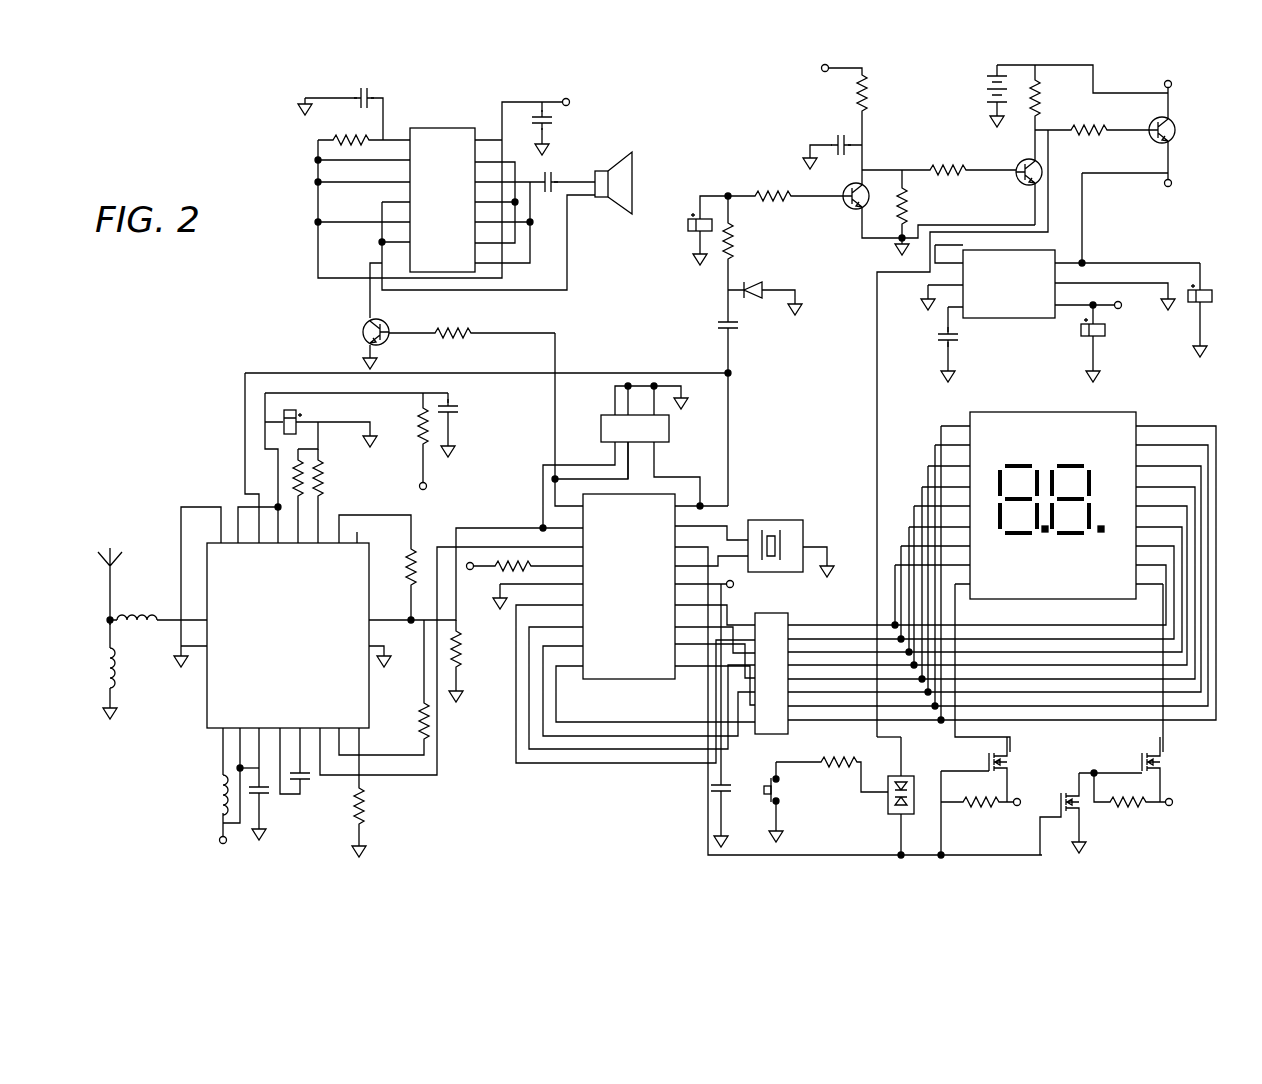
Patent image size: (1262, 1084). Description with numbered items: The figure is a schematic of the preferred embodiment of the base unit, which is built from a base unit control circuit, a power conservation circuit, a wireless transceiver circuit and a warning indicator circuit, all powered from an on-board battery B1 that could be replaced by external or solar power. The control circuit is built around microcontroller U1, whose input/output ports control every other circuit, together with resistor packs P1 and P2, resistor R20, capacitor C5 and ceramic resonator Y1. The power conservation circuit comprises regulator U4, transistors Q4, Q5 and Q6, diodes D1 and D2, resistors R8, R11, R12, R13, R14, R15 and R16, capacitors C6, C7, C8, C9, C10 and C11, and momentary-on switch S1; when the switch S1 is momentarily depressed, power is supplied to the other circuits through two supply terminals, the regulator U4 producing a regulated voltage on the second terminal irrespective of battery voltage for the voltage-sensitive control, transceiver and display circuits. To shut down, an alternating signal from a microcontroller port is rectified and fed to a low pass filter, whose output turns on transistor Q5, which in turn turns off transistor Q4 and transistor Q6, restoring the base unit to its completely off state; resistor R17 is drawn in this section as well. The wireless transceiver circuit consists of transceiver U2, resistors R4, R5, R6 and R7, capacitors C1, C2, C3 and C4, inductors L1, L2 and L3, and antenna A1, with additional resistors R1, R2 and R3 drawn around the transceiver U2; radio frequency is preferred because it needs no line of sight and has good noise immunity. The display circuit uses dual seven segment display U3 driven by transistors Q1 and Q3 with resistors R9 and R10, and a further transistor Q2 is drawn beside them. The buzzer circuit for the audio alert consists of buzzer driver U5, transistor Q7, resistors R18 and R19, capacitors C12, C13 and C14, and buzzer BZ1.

The microcontroller U1 is at (640, 606).
The transceiver U2 is at (298, 643).
The dual seven segment display U3 is at (1083, 392).
The regulator U4 is at (1014, 302).
The buzzer driver U5 is at (466, 104).
The resistor pack P1 is at (669, 428).
The resistor pack P2 is at (771, 684).
The ceramic resonator Y1 is at (780, 518).
The antenna A1 is at (114, 558).
The on-board battery B1 is at (976, 96).
The buzzer BZ1 is at (632, 183).
The diode D1 is at (908, 796).
The diode D2 is at (765, 294).
The momentary-on switch S1 is at (788, 802).
The inductor L1 is at (219, 782).
The inductor L2 is at (158, 621).
The inductor L3 is at (130, 669).
The transistor Q1 is at (992, 769).
The transistor Q2 is at (1076, 814).
The transistor Q3 is at (1167, 769).
The transistor Q4 is at (1016, 177).
The transistor Q5 is at (832, 197).
The transistor Q6 is at (1150, 133).
The transistor Q7 is at (382, 334).
The resistor R1 is at (374, 792).
The resistor R2 is at (384, 687).
The resistor R3 is at (471, 661).
The resistor R4 is at (398, 583).
The resistor R5 is at (334, 496).
The resistor R6 is at (274, 496).
The resistor R7 is at (406, 437).
The resistor R8 is at (832, 768).
The resistor R9 is at (977, 813).
The resistor R10 is at (1129, 800).
The resistor R11 is at (1092, 133).
The resistor R12 is at (1054, 97).
The resistor R13 is at (959, 160).
The resistor R14 is at (919, 204).
The resistor R15 is at (868, 126).
The resistor R16 is at (785, 188).
The resistor R17 is at (750, 243).
The resistor R18 is at (364, 147).
The resistor R19 is at (472, 336).
The resistor R20 is at (528, 579).
The capacitor C1 is at (266, 784).
The capacitor C2 is at (304, 765).
The capacitor C3 is at (316, 424).
The capacitor C4 is at (464, 423).
The capacitor C5 is at (731, 715).
The capacitor C6 is at (826, 141).
The capacitor C7 is at (694, 230).
The capacitor C8 is at (710, 331).
The capacitor C9 is at (1080, 343).
The capacitor C10 is at (926, 344).
The capacitor C11 is at (1216, 310).
The capacitor C12 is at (350, 111).
The capacitor C13 is at (548, 128).
The capacitor C14 is at (562, 187).